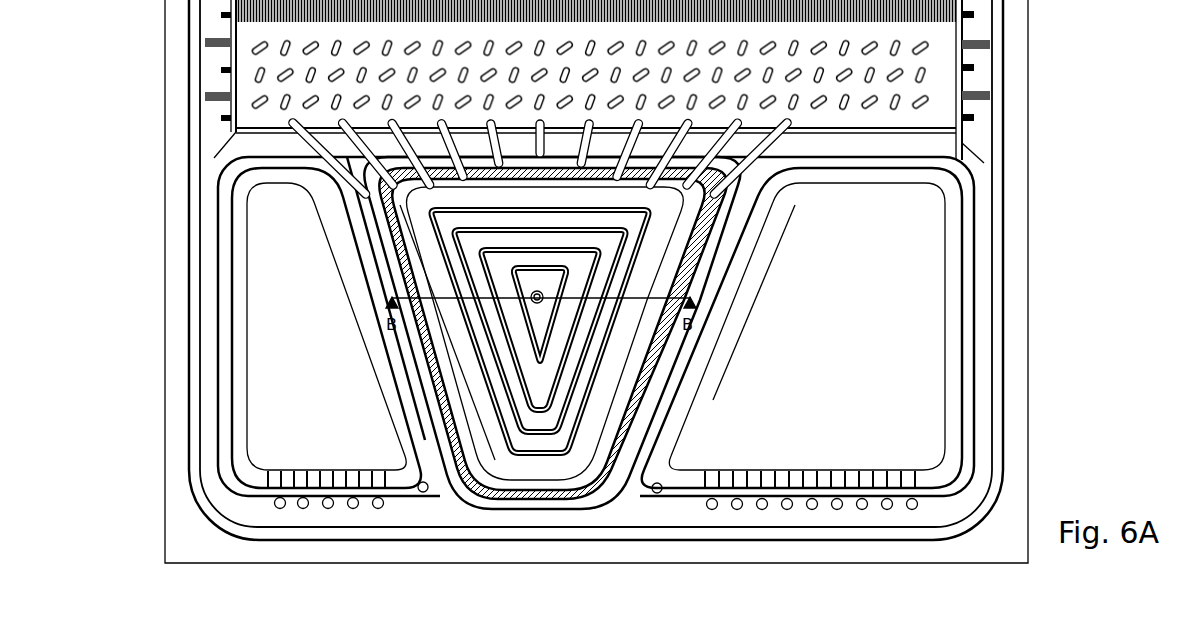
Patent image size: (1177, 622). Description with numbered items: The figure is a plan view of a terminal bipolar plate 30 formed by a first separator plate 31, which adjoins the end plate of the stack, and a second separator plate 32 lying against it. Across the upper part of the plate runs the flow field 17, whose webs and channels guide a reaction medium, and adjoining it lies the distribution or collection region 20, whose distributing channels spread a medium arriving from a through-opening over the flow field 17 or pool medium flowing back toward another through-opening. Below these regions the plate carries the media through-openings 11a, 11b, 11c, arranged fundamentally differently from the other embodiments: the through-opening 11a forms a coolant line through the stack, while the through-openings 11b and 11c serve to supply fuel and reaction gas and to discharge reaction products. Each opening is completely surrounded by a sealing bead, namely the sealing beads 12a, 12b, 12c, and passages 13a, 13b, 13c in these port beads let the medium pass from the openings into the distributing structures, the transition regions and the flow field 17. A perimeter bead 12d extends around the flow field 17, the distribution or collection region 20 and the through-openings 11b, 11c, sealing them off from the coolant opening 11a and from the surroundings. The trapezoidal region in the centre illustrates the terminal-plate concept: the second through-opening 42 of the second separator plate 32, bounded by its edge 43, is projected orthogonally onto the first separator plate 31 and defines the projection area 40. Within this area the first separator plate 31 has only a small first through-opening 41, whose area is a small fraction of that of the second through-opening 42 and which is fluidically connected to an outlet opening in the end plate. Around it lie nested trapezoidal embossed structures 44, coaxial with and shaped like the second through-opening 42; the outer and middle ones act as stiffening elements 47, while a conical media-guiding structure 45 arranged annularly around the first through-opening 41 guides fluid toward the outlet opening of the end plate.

The terminal bipolar plate 30 is at (150, 79).
The second separator plate 32 is at (182, 207).
The flow field 17 is at (943, 30).
The distribution or collection region 20 is at (907, 88).
The sealing bead 12a is at (968, 387).
The sealing bead 12b is at (222, 434).
The sealing bead 12c is at (550, 500).
The perimeter bead 12d is at (192, 259).
The passage 13a is at (888, 489).
The passage 13b is at (356, 489).
The passage 13c is at (750, 148).
The through-opening 11a is at (855, 364).
The through-opening 11b is at (347, 443).
The through-opening 11c is at (544, 203).
The projection area 40 is at (568, 477).
The first through-opening 41 is at (549, 292).
The second through-opening 42 is at (482, 390).
The edge 43 is at (412, 249).
The embossed structure 44 is at (450, 233).
The media-guiding structure 45 is at (532, 292).
The stiffening element 47 is at (630, 234).
The first separator plate 31 is at (533, 472).